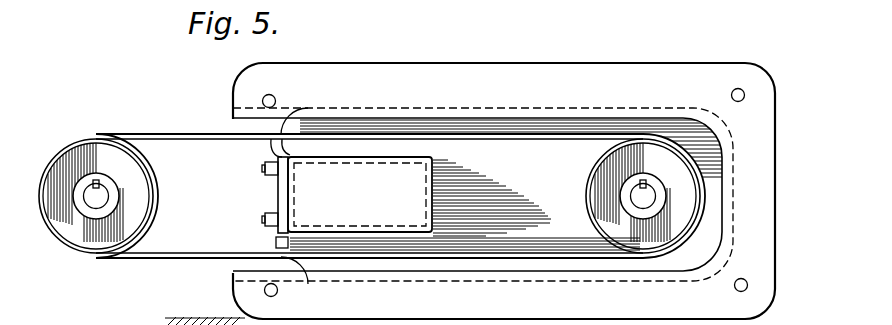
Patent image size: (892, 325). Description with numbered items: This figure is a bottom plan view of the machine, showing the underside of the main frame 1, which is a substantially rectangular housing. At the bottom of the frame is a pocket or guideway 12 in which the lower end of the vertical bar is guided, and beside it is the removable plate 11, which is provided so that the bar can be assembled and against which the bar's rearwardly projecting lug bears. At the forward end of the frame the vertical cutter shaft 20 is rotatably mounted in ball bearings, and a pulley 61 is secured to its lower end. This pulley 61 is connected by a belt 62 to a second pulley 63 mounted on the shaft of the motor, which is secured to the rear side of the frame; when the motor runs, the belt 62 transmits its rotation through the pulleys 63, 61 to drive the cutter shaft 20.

The main frame 1 is at (433, 63).
The removable plate 11 is at (277, 193).
The guideway 12 is at (419, 196).
The cutter shaft 20 is at (646, 194).
The pulley 61 is at (593, 188).
The belt 62 is at (197, 125).
The pulley 63 is at (152, 195).